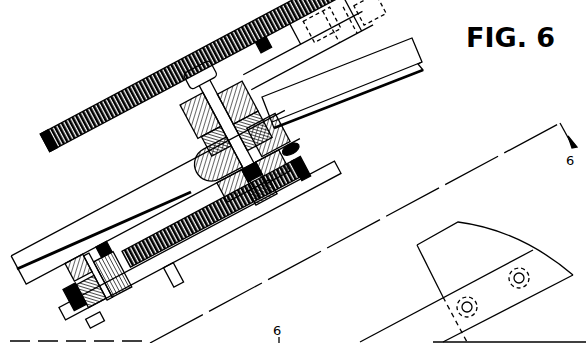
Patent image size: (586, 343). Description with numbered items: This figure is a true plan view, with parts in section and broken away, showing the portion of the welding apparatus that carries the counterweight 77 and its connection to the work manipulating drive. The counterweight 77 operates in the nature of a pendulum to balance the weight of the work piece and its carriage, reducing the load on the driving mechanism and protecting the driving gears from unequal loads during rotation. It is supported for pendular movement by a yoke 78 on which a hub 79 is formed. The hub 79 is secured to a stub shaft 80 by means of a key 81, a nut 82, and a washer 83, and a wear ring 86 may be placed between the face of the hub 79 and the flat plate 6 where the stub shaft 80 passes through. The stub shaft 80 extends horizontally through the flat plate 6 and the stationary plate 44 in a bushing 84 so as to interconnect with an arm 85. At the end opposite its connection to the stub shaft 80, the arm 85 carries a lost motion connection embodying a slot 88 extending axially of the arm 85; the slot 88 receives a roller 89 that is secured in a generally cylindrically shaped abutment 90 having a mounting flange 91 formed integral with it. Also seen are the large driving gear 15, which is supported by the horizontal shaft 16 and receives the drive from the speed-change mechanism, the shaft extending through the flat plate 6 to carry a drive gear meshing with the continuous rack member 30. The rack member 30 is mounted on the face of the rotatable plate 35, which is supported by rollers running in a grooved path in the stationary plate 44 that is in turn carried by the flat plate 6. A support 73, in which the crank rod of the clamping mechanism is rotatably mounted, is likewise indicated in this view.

The flat plate 6 is at (68, 228).
The large driving gear 15 is at (190, 50).
The horizontal shaft 16 is at (300, 150).
The continuous rack member 30 is at (303, 187).
The plate 35 is at (229, 229).
The stationary member or plate 44 is at (125, 222).
The support 73 is at (186, 283).
The counterweight 77 is at (577, 283).
The yoke 78 is at (306, 67).
The hub 79 is at (200, 118).
The stub shaft 80 is at (207, 137).
The key 81 is at (200, 150).
The nut 82 is at (193, 88).
The washer 83 is at (190, 106).
The bushing 84 is at (268, 133).
The arm 85 is at (268, 202).
The wear ring 86 is at (262, 117).
The slot 88 is at (108, 248).
The roller 89 is at (78, 277).
The abutment 90 is at (72, 302).
The mounting flange 91 is at (100, 312).